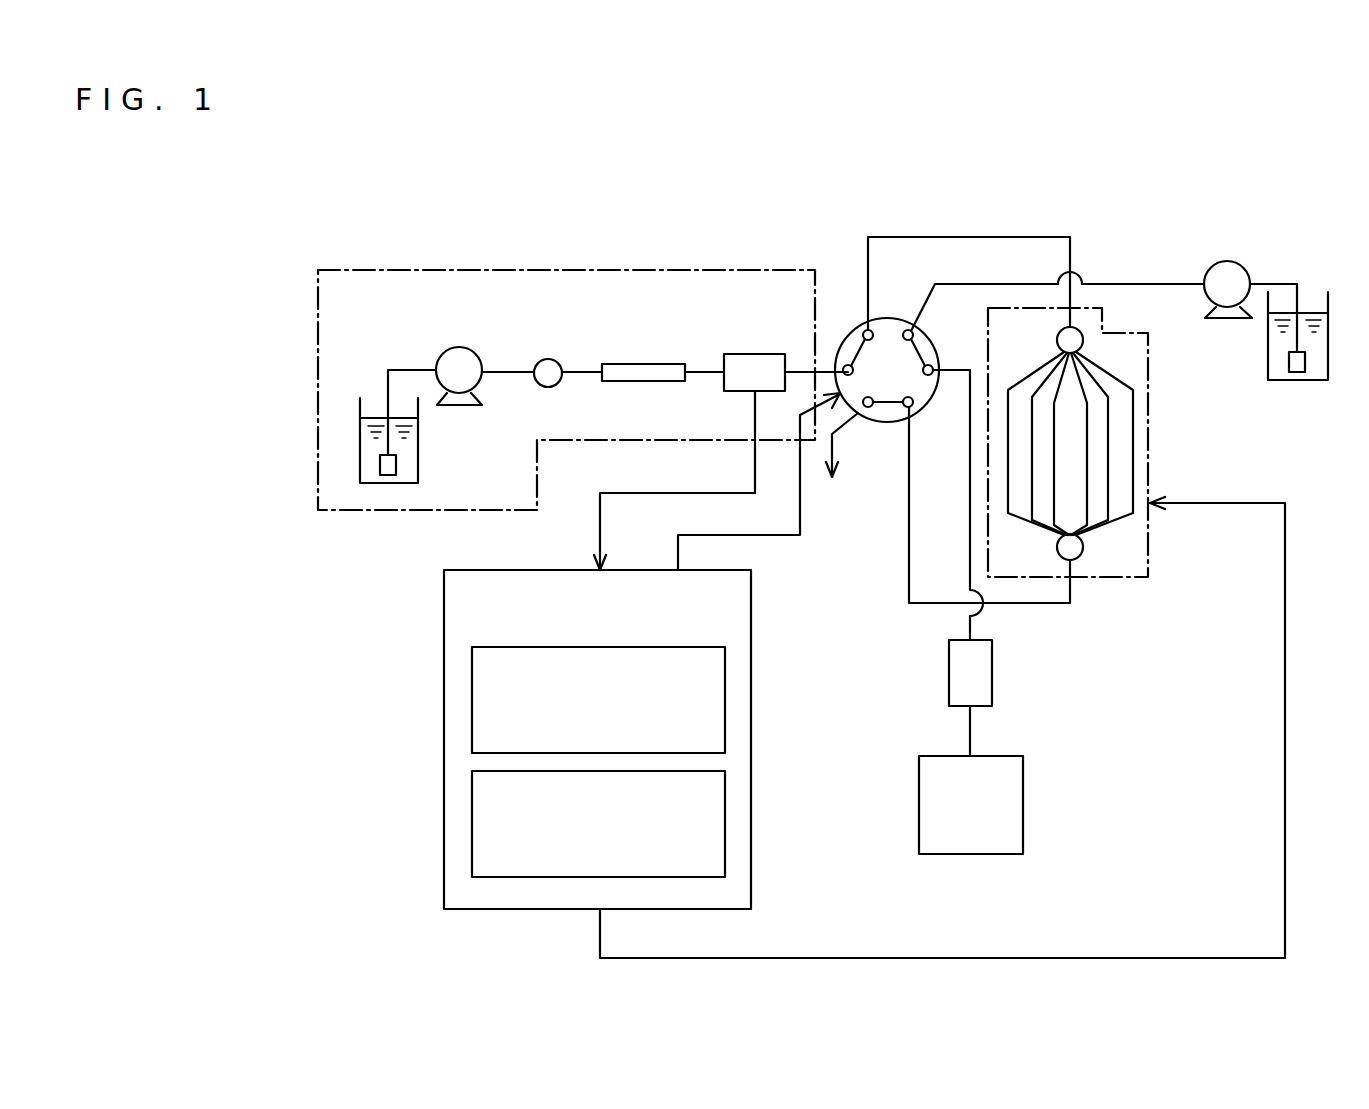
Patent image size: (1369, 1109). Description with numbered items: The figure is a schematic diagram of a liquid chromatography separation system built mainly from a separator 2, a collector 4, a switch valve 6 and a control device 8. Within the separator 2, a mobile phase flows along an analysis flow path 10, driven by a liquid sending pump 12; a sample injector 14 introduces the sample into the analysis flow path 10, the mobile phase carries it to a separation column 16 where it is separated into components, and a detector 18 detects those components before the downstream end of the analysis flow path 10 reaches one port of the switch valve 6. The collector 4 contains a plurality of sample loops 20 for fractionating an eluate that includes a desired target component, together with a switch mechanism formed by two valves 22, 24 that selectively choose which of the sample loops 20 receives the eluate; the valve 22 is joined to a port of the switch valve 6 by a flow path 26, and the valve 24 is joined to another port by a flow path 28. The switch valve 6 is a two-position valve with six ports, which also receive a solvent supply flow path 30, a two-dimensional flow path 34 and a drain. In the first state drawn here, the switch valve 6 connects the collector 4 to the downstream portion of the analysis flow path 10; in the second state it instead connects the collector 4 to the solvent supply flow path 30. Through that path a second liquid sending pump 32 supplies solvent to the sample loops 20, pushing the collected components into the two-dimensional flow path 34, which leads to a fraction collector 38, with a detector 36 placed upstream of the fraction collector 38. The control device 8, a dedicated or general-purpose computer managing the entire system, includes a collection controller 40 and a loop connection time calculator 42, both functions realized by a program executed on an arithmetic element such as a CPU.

The separator 2 is at (568, 268).
The collector 4 is at (1150, 458).
The switch valve 6 is at (930, 330).
The control device 8 is at (751, 621).
The analysis flow path 10 is at (496, 370).
The liquid sending pump 12 is at (447, 348).
The sample injector 14 is at (557, 359).
The separation column 16 is at (620, 364).
The detector 18 is at (742, 354).
The sample loops 20 is at (1133, 418).
The valve 22 is at (1083, 342).
The valve 24 is at (1085, 553).
The flow path 26 is at (950, 237).
The flow path 28 is at (908, 550).
The solvent supply flow path 30 is at (1110, 283).
The liquid sending pump 32 is at (1236, 262).
The two-dimensional flow path 34 is at (972, 628).
The detector 36 is at (992, 677).
The fraction collector 38 is at (1023, 808).
The collection controller 40 is at (725, 698).
The loop connection time calculator 42 is at (725, 822).